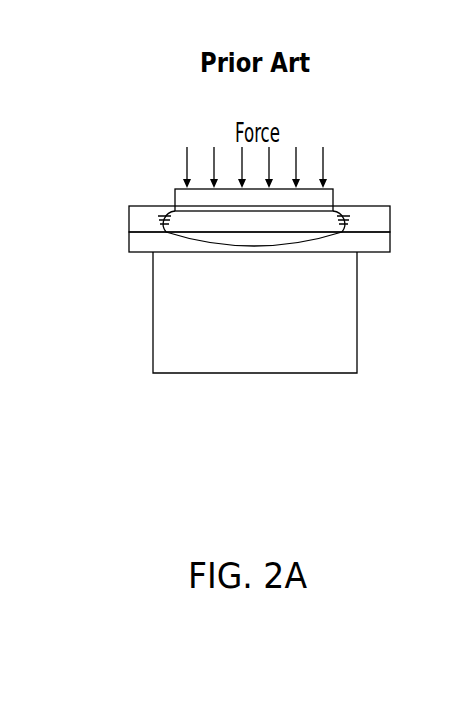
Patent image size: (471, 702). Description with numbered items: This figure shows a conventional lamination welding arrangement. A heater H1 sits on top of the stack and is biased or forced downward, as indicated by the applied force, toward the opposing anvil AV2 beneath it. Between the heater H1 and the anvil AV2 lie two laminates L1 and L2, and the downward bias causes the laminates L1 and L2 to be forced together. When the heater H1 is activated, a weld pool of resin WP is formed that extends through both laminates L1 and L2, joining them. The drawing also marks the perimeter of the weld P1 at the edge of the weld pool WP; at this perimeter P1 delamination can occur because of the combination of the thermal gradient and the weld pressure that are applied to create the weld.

The perimeter of the weld P1 is at (172, 207).
The heater H1 is at (333, 189).
The laminate L1 is at (390, 218).
The laminate L2 is at (390, 243).
The weld pool of resin WP is at (308, 244).
The anvil AV2 is at (343, 373).